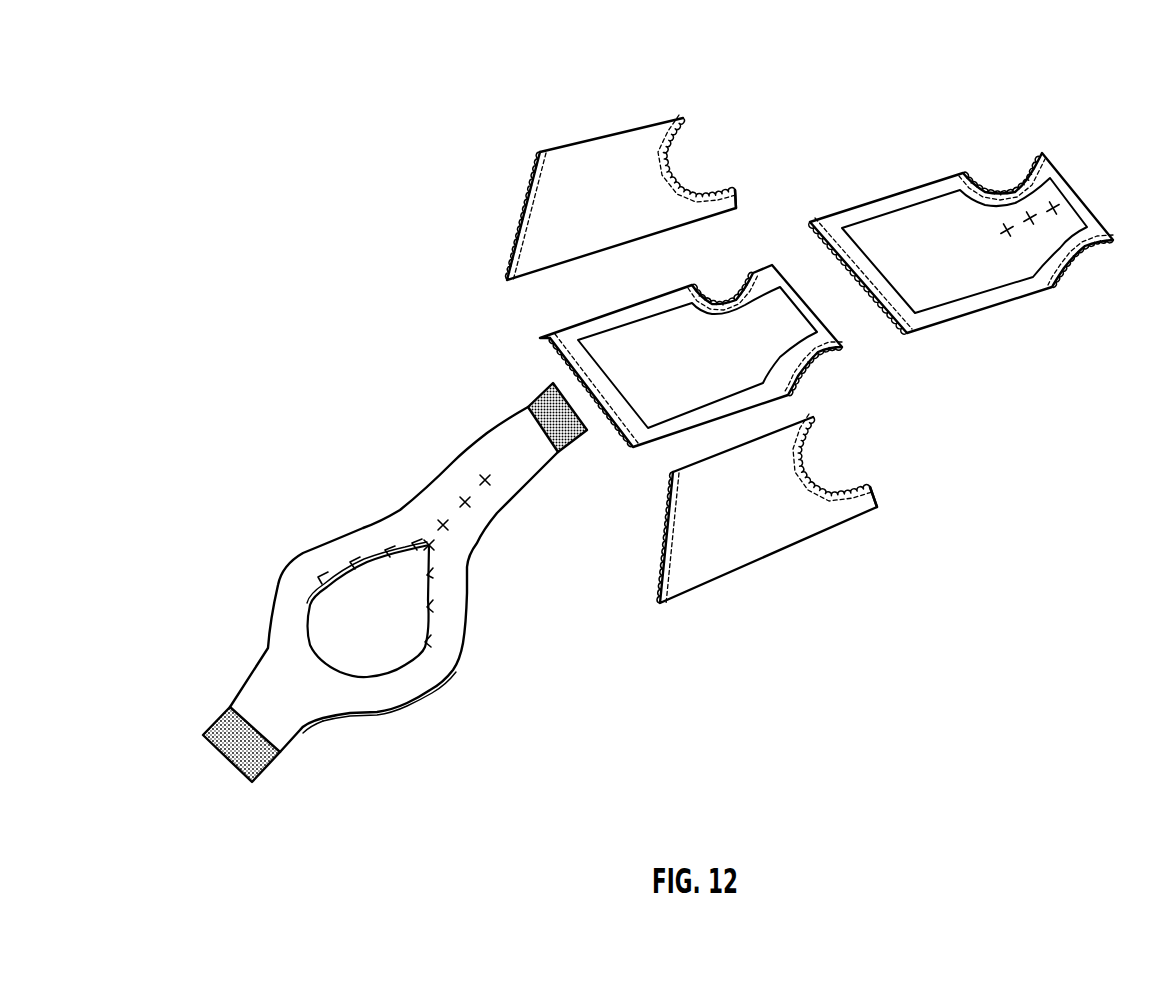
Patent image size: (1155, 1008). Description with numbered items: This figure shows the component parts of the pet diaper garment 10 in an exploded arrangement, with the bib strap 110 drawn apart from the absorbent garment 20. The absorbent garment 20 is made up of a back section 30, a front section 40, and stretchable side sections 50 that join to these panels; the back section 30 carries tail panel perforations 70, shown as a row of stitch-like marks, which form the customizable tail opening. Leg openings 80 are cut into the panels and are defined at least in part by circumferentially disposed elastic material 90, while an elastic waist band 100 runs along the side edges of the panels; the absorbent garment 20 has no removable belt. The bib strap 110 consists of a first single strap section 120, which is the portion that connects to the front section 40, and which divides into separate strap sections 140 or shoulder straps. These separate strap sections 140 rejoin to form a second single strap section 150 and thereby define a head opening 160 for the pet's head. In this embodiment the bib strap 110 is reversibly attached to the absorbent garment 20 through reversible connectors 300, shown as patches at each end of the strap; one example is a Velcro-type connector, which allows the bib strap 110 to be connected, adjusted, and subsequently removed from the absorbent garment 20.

The pet diaper garment 10 is at (437, 56).
The absorbent garment 20 is at (880, 393).
The back section 30 is at (948, 222).
The front section 40 is at (597, 313).
The stretchable side sections 50 is at (597, 137).
The tail panel perforations 70 is at (1035, 215).
The leg openings 80 is at (690, 138).
The elastic material 90 is at (700, 175).
The elastic waist band 100 is at (508, 212).
The bib strap 110 is at (437, 782).
The first single strap section 120 is at (493, 460).
The separate strap sections 140 is at (305, 578).
The second single strap section 150 is at (270, 722).
The head opening 160 is at (397, 630).
The reversible connector 300 is at (530, 398).